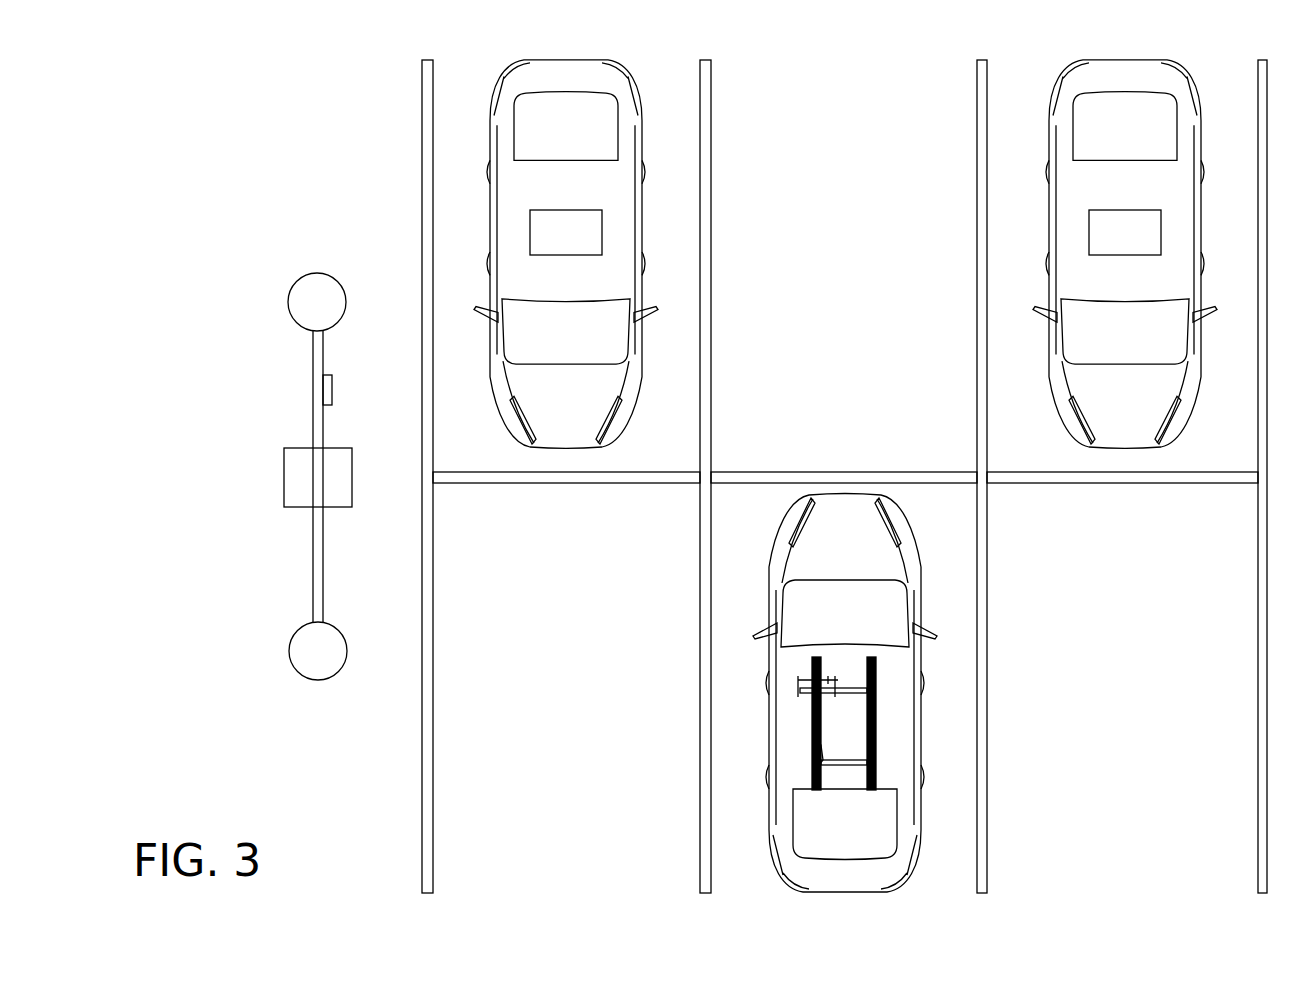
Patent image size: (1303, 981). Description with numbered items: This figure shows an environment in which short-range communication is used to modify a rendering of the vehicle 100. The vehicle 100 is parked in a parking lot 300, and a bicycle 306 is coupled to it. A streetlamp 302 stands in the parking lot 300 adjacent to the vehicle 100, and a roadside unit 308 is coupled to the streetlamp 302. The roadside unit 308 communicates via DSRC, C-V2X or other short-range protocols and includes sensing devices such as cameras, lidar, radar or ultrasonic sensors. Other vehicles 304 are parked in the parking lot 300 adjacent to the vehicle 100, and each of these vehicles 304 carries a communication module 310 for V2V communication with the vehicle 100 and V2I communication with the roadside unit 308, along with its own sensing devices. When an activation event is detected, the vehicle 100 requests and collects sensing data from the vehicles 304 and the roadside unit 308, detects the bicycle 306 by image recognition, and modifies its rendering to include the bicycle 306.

The parking lot 300 is at (862, 92).
The vehicles 304 is at (571, 60).
The communication modules 310 is at (546, 243).
The vehicle 100 is at (856, 893).
The bicycle 306 is at (812, 729).
The streetlamp 302 is at (313, 558).
The roadside unit 308 is at (332, 392).